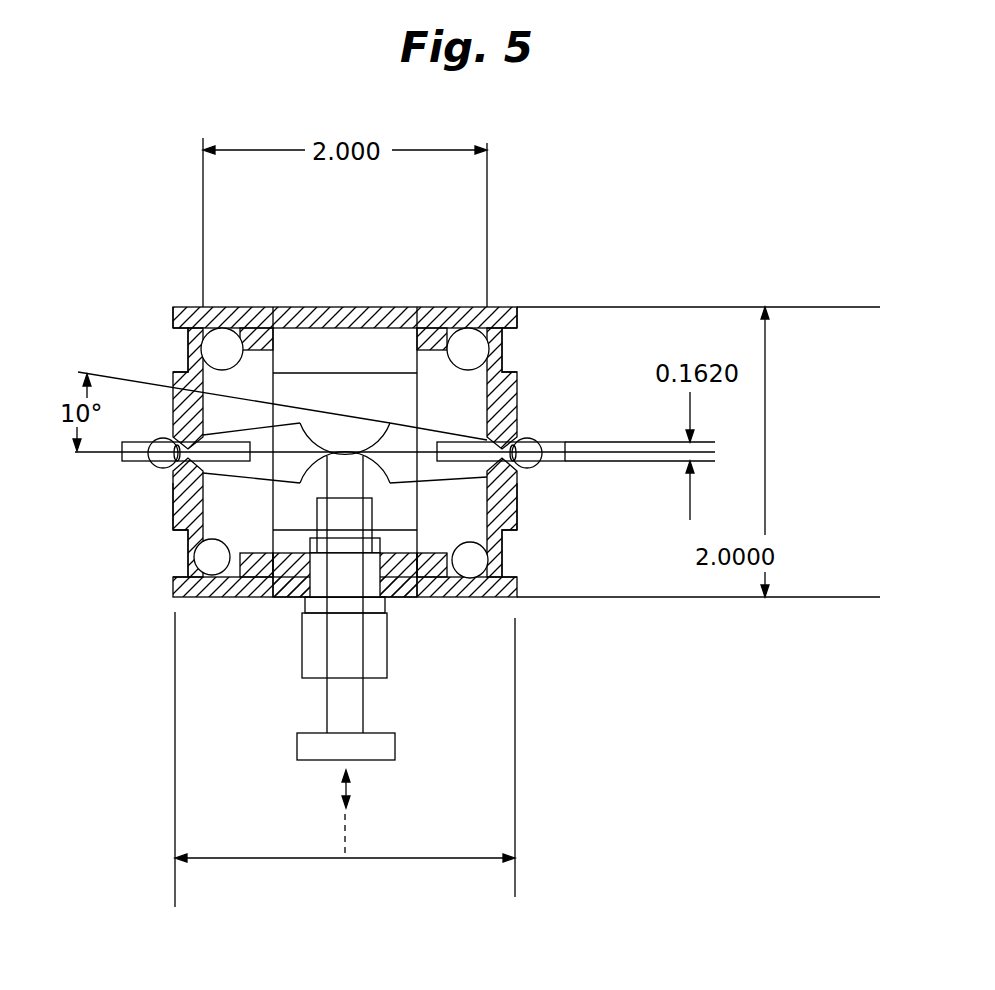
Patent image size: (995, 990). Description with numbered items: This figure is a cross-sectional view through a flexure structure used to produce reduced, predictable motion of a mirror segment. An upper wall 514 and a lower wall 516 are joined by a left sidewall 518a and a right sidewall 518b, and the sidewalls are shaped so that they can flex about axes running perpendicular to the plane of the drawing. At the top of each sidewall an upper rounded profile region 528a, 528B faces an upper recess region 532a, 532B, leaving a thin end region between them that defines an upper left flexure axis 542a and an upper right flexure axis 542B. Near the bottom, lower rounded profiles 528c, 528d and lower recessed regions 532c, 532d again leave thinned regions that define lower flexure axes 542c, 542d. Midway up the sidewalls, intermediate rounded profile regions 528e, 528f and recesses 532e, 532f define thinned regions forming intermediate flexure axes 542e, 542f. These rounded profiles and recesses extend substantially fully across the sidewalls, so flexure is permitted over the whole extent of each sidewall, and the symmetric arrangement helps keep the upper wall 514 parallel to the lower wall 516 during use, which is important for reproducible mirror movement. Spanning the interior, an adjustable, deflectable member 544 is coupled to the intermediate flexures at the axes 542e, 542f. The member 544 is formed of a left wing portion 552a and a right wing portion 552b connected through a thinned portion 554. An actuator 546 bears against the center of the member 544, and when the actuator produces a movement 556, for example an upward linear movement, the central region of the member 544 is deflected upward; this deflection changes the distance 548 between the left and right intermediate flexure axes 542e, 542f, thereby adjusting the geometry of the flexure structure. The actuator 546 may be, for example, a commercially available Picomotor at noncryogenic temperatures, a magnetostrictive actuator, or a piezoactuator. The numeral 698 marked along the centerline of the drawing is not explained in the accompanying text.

The upper wall 514 is at (261, 308).
The lower wall 516 is at (258, 598).
The left sidewall 518a is at (184, 356).
The right sidewall 518b is at (506, 372).
The upper rounded profile region 528a is at (227, 318).
The upper rounded profile region 528B is at (474, 325).
The lower rounded profile 528c is at (210, 576).
The lower rounded profile 528d is at (478, 570).
The intermediate rounded profile region 528e is at (206, 436).
The intermediate rounded profile region 528f is at (486, 438).
The upper recess region 532a is at (174, 383).
The upper recess region 532B is at (501, 346).
The lower recessed region 532c is at (189, 547).
The lower recessed region 532d is at (502, 546).
The recess 532e is at (180, 470).
The recess 532f is at (514, 437).
The upper left flexure axis 542a is at (192, 322).
The upper right flexure axis 542B is at (499, 312).
The lower flexure axis 542c is at (176, 598).
The lower flexure axis 542d is at (508, 600).
The intermediate flexure axis 542e is at (204, 486).
The intermediate flexure axis 542f is at (511, 469).
The deflectable member 544 is at (442, 471).
The actuator 546 is at (387, 608).
The distance 548 is at (298, 858).
The left wing portion 552a is at (296, 440).
The right wing portion 552b is at (393, 432).
The thinned portion 554 is at (345, 453).
The movement 556 is at (354, 779).
The central axis 698 is at (347, 833).